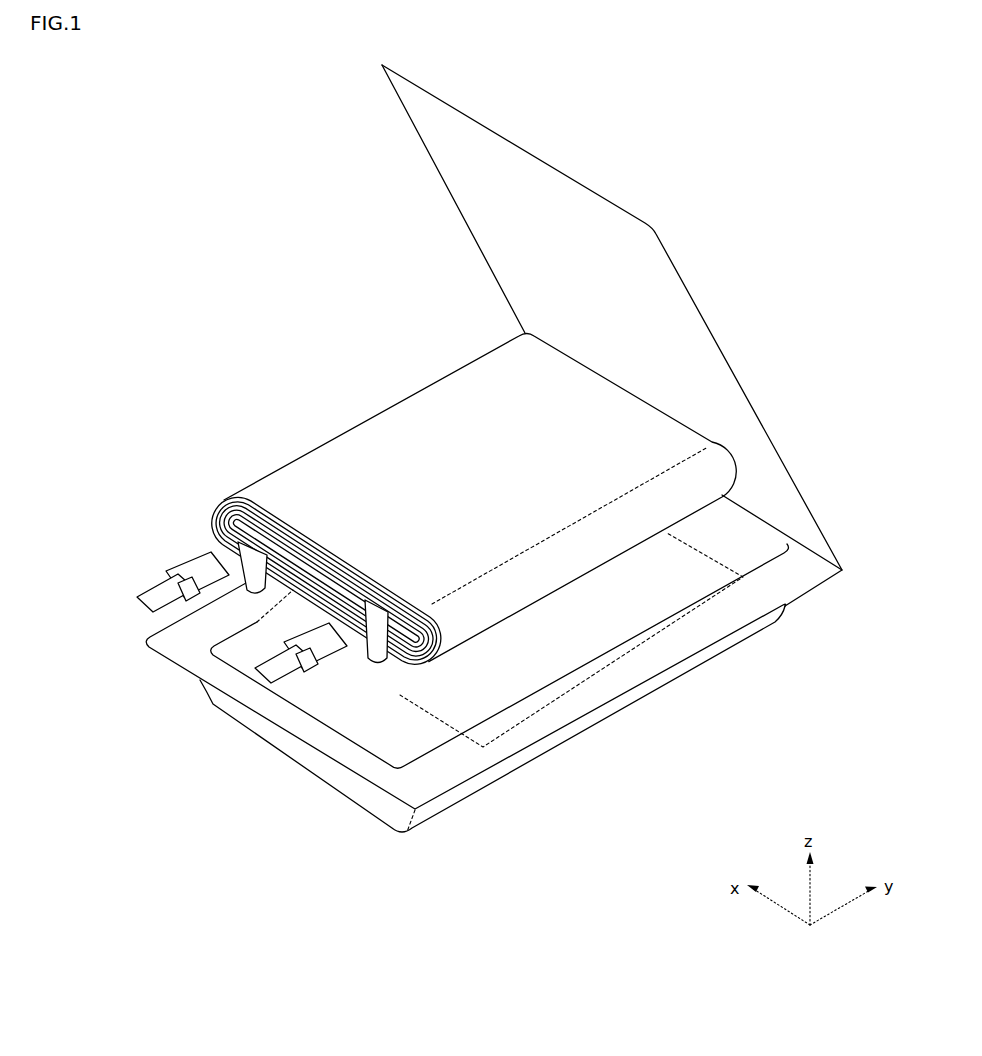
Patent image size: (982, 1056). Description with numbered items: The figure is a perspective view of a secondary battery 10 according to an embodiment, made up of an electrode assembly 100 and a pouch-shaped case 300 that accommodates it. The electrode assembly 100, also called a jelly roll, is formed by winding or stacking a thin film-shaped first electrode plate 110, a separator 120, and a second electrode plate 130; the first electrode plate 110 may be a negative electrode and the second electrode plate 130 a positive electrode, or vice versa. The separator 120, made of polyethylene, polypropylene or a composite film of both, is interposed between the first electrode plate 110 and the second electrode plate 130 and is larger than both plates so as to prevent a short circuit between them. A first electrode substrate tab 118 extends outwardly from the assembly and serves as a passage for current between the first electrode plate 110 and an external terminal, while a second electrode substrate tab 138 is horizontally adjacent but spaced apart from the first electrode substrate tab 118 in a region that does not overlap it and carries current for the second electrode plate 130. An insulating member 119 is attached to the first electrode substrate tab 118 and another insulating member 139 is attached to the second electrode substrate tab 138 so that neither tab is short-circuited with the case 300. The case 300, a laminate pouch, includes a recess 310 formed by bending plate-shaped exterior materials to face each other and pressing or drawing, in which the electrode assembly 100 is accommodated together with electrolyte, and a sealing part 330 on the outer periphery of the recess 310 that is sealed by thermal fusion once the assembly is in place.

The secondary battery 10 is at (64, 83).
The electrode assembly 100 is at (320, 436).
The first electrode plate 110 is at (210, 530).
The first electrode substrate tab 118 is at (215, 606).
The insulating member 119 is at (203, 548).
The separator 120 is at (212, 512).
The second electrode plate 130 is at (221, 499).
The second electrode substrate tab 138 is at (505, 765).
The insulating member 139 is at (340, 642).
The case 300 is at (351, 838).
The recess 310 is at (523, 663).
The sealing part 330 is at (640, 653).